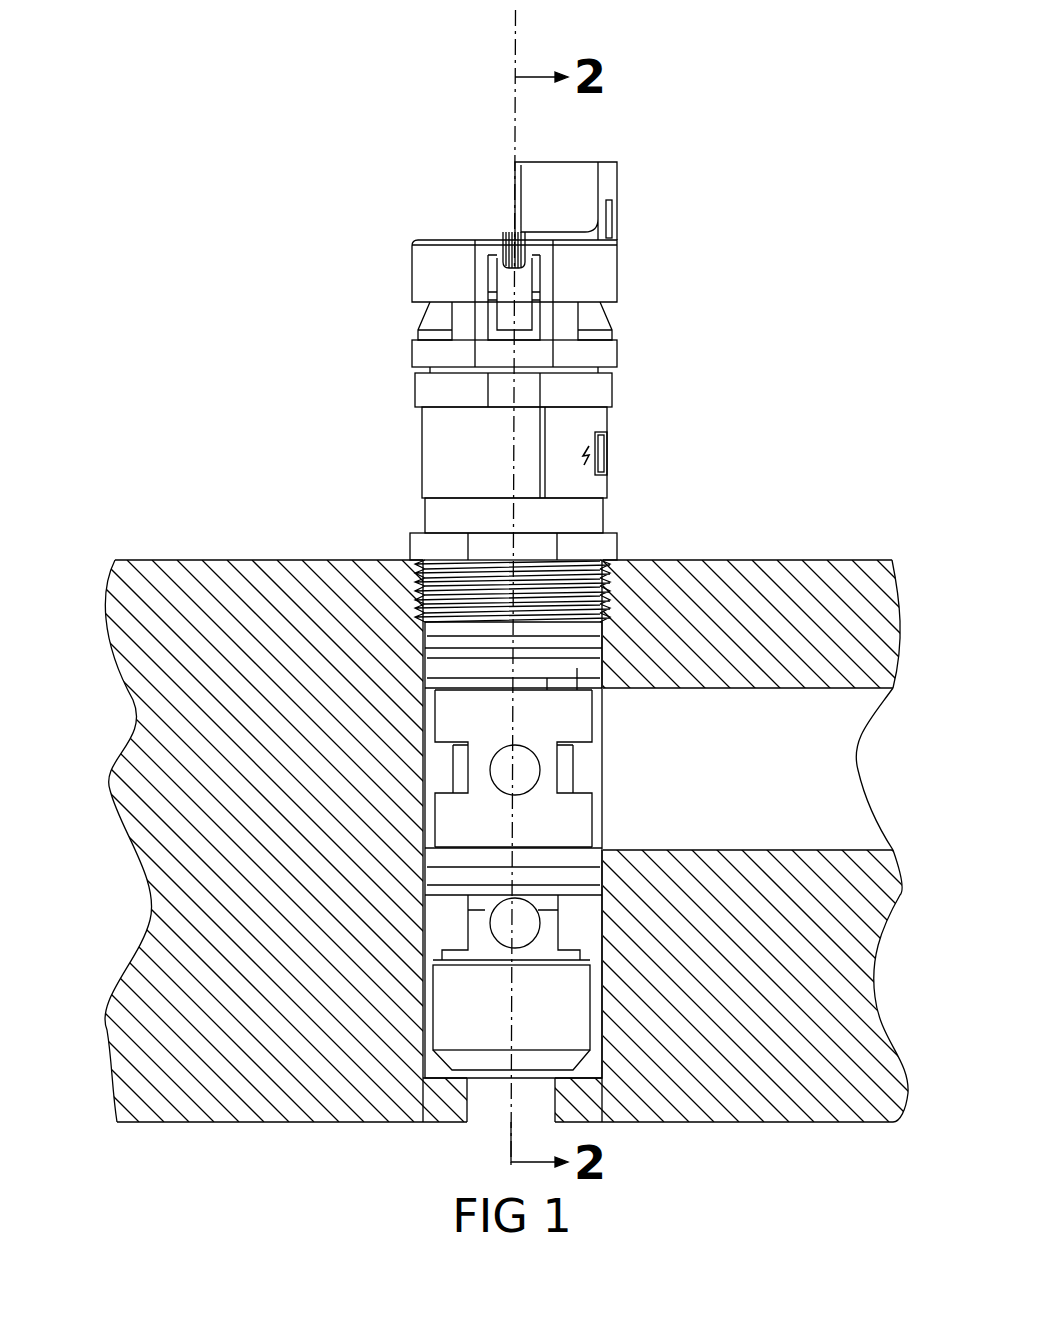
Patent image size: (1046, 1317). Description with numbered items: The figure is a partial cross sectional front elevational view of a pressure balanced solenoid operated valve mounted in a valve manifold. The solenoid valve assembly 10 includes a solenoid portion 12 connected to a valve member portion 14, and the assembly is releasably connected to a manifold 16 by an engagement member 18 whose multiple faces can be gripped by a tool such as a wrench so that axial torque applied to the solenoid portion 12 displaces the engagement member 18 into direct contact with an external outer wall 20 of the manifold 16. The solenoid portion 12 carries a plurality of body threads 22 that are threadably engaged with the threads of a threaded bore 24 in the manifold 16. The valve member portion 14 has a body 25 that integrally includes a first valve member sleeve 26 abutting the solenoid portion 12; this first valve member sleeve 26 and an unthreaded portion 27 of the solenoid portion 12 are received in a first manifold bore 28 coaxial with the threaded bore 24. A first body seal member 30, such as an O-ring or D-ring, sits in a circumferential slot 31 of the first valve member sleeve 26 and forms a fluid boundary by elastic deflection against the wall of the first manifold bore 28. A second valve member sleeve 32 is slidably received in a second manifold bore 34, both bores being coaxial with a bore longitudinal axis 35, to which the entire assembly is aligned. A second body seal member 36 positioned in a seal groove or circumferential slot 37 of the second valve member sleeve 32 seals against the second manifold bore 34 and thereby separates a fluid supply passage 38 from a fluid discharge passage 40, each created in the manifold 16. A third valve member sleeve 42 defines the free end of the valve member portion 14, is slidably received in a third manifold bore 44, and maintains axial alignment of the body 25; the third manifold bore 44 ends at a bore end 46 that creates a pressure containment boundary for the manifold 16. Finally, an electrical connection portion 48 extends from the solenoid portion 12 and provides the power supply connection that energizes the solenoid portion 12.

The solenoid valve assembly 10 is at (652, 401).
The solenoid portion 12 is at (432, 452).
The valve member portion 14 is at (585, 766).
The manifold 16 is at (778, 570).
The engagement member 18 is at (543, 538).
The external outer wall 20 is at (216, 556).
The body threads 22 is at (614, 588).
The threaded bore 24 is at (415, 583).
The body 25 is at (477, 935).
The first valve member sleeve 26 is at (600, 655).
The unthreaded portion 27 is at (593, 637).
The first manifold bore 28 is at (592, 690).
The first body seal member 30 is at (577, 670).
The circumferential slot 31 is at (547, 680).
The second valve member sleeve 32 is at (565, 855).
The second manifold bore 34 is at (597, 895).
The bore longitudinal axis 35 is at (515, 40).
The second body seal member 36 is at (585, 868).
The seal groove or circumferential slot 37 is at (572, 868).
The fluid supply passage 38 is at (848, 773).
The fluid discharge passage 40 is at (503, 1103).
The third valve member sleeve 42 is at (492, 1027).
The third manifold bore 44 is at (460, 1072).
The bore end 46 is at (572, 1098).
The electrical connection portion 48 is at (565, 180).